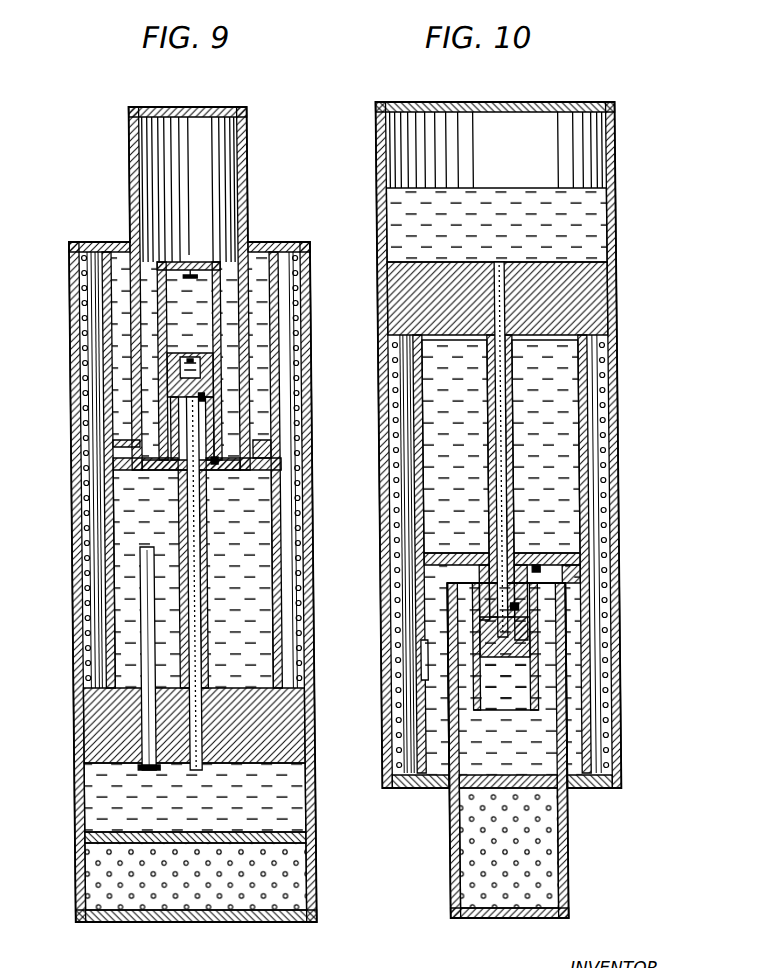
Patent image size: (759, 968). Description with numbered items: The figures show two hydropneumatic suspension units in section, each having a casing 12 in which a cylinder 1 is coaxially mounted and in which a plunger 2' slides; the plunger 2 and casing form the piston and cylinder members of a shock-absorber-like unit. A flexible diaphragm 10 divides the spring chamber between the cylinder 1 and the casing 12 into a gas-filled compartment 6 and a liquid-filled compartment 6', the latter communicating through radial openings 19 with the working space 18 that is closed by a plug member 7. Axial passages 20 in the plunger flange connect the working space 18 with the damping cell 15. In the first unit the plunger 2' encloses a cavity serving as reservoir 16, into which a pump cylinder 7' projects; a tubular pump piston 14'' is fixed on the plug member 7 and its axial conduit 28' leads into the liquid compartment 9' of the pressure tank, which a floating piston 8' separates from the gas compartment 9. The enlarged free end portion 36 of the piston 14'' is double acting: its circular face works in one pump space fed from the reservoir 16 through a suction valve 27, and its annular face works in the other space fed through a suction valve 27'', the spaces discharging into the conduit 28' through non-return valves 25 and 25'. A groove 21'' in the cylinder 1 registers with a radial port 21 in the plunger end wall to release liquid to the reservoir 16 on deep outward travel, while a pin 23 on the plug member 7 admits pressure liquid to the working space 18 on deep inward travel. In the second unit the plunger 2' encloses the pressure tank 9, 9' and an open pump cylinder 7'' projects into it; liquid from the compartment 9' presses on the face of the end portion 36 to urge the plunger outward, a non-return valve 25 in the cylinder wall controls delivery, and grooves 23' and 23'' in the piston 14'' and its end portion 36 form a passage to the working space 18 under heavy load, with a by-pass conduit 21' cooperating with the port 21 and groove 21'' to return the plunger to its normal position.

In FIG. 9, the cylinder 1 is at (105, 535).
In FIG. 10, the cylinder 1 is at (600, 505).
In FIG. 10, the hollow plunger 2 is at (486, 750).
In FIG. 9, the plunger 2' is at (204, 288).
In FIG. 9, the gas-filled compartment 6 is at (178, 514).
In FIG. 10, the gas-filled compartment 6 is at (512, 445).
In FIG. 10, the liquid-filled compartment 6' is at (380, 554).
In FIG. 9, the plug member 7 is at (174, 725).
In FIG. 10, the plug member 7 is at (515, 298).
In FIG. 9, the pump cylinder 7' is at (209, 334).
In FIG. 10, the open pump cylinder 7'' is at (507, 679).
In FIG. 9, the floating piston 8' is at (174, 854).
In FIG. 10, the floating piston 8' is at (527, 797).
In FIG. 9, the gas filled compartment 9 is at (196, 897).
In FIG. 10, the gas filled compartment 9 is at (482, 848).
In FIG. 9, the liquid filled compartment 9' is at (323, 791).
In FIG. 10, the liquid filled compartment 9' is at (538, 670).
In FIG. 9, the flexible diaphragm 10 is at (90, 438).
In FIG. 10, the flexible diaphragm 10 is at (605, 480).
In FIG. 9, the casing 12 is at (312, 870).
In FIG. 10, the casing 12 is at (380, 205).
In FIG. 9, the tubular pump piston 14'' is at (193, 579).
In FIG. 10, the tubular pump piston 14'' is at (501, 476).
In FIG. 9, the damping cell 15 is at (302, 300).
In FIG. 10, the damping cell 15 is at (420, 722).
In FIG. 9, the reservoir 16 is at (140, 178).
In FIG. 10, the reservoir 16 is at (598, 158).
In FIG. 9, the working space 18 is at (275, 520).
In FIG. 10, the working space 18 is at (585, 440).
In FIG. 9, the radial openings 19 is at (105, 650).
In FIG. 10, the radial openings 19 is at (395, 355).
In FIG. 9, the axial passages 20 is at (282, 466).
In FIG. 10, the axial passages 20 is at (590, 558).
In FIG. 9, the radial port 21 is at (68, 470).
In FIG. 10, the radial port 21 is at (380, 554).
In FIG. 10, the by-pass conduit 21' is at (505, 646).
In FIG. 9, the axial groove 21'' is at (66, 470).
In FIG. 10, the axial groove 21'' is at (379, 554).
In FIG. 9, the pin 23 is at (118, 583).
In FIG. 10, the axial groove 23' is at (488, 471).
In FIG. 10, the axial groove 23'' is at (573, 636).
In FIG. 9, the non-return valve 25 is at (189, 346).
In FIG. 10, the non-return valve 25 is at (520, 580).
In FIG. 9, the non-return valve 25' is at (258, 406).
In FIG. 9, the suction valve 27 is at (188, 248).
In FIG. 10, the suction valve 27 is at (595, 578).
In FIG. 9, the suction valve 27'' is at (232, 484).
In FIG. 9, the axial conduit 28' is at (195, 797).
In FIG. 10, the axial conduit 28' is at (496, 225).
In FIG. 9, the enlarged free end portion 36 is at (200, 368).
In FIG. 10, the enlarged free end portion 36 is at (518, 640).